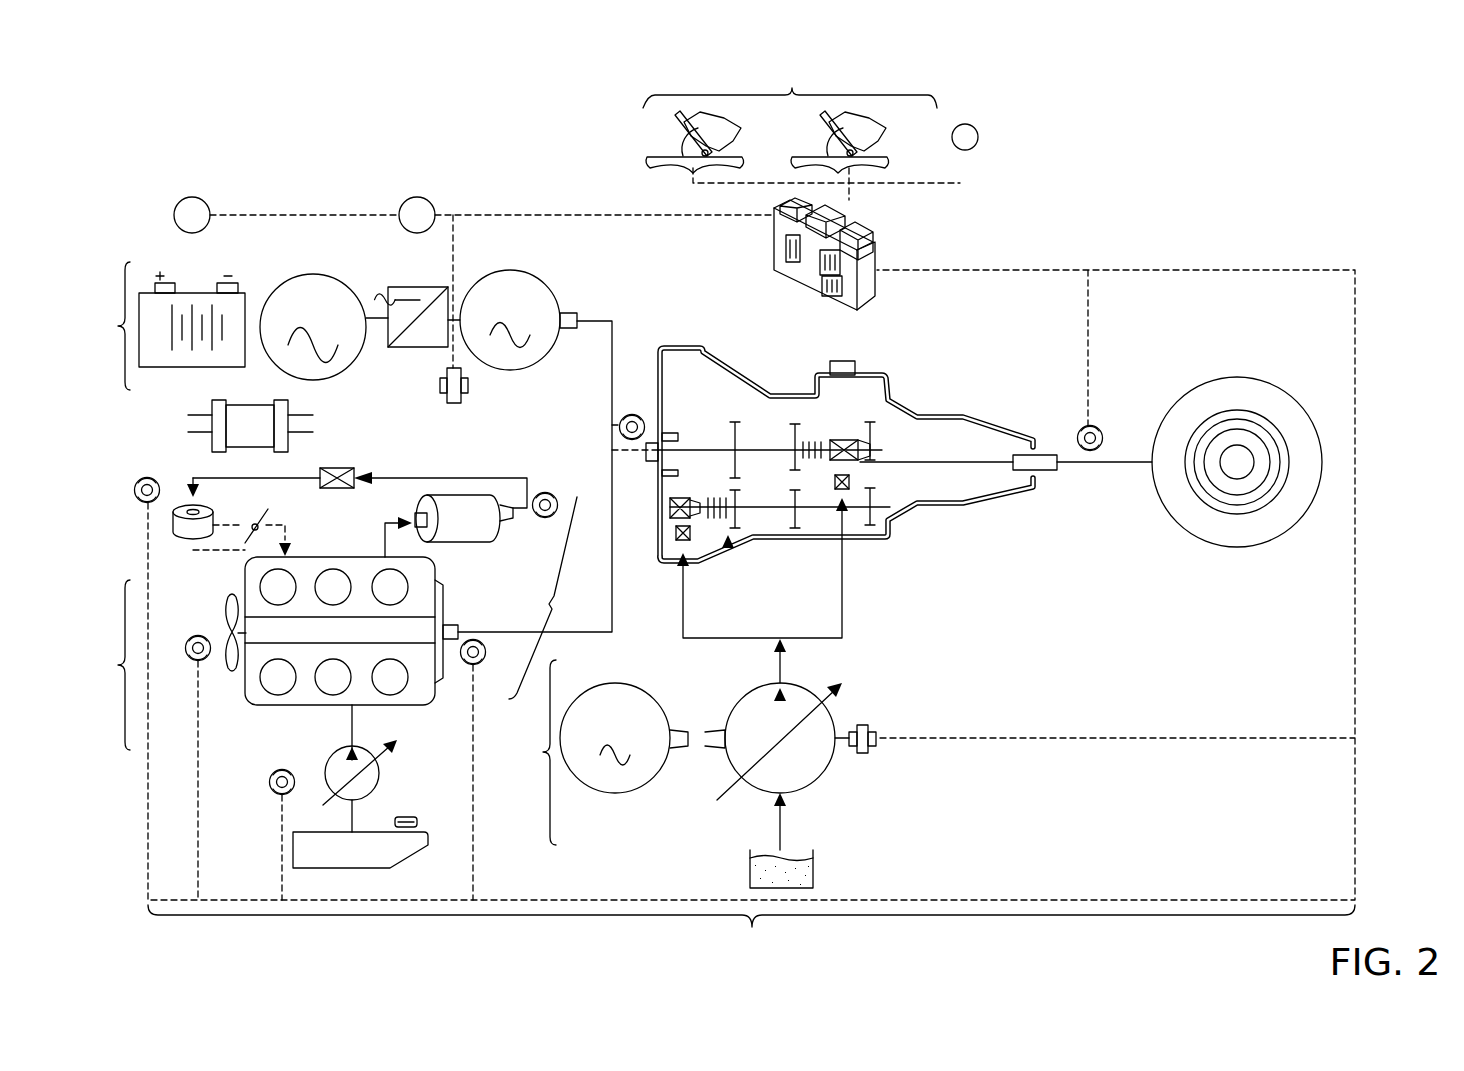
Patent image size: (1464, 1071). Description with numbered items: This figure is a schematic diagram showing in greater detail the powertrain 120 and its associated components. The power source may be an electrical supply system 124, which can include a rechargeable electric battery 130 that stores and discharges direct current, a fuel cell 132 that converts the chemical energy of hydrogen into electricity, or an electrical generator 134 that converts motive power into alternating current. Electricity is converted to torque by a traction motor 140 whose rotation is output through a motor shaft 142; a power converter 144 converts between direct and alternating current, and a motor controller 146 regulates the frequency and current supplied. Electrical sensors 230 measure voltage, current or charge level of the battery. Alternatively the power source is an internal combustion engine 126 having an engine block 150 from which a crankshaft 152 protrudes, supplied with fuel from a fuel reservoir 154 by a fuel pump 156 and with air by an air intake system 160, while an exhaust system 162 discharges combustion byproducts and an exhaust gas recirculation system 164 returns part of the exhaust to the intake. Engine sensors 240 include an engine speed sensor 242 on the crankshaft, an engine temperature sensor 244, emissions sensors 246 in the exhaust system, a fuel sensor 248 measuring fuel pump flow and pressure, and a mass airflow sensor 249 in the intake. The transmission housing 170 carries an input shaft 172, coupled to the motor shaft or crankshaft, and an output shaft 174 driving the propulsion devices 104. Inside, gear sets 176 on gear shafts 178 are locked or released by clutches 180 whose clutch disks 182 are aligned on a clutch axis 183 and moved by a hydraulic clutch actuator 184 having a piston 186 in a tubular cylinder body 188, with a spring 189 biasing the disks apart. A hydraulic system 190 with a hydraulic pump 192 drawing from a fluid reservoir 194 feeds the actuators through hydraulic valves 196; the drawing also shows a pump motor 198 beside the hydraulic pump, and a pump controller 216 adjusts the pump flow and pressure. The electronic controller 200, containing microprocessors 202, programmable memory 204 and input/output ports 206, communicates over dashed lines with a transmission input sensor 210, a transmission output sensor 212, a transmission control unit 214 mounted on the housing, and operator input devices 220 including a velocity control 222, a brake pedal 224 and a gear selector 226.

The propulsion devices 104 is at (1280, 393).
The powertrain 120 is at (751, 623).
The electrical supply system 124 is at (105, 326).
The internal combustion engine 126 is at (106, 665).
The rechargeable electric battery 130 is at (203, 300).
The fuel cell 132 is at (236, 439).
The electrical generator 134 is at (310, 272).
The traction motor 140 is at (512, 272).
The motor shaft 142 is at (568, 310).
The power converter 144 is at (419, 350).
The motor controller 146 is at (468, 395).
The engine block 150 is at (250, 683).
The crankshaft 152 is at (460, 628).
The fuel reservoir 154 is at (395, 867).
The fuel pump 156 is at (382, 777).
The air intake system 160 is at (220, 550).
The exhaust system 162 is at (454, 532).
The exhaust gas recirculation (EGR) system 164 is at (342, 467).
The structural transmission housing 170 is at (797, 385).
The input shaft 172 is at (652, 437).
The output shaft 174 is at (1042, 457).
The gear sets 176 is at (715, 382).
The gear shafts 178 is at (763, 447).
The clutches 180 is at (792, 430).
The clutch disks 182 is at (727, 487).
The clutch axis 183 is at (972, 412).
The hydraulic clutch actuator 184 is at (877, 470).
The piston 186 is at (843, 440).
The tubular cylinder body 188 is at (870, 443).
The spring 189 is at (665, 475).
The hydraulic system 190 is at (531, 752).
The hydraulic pump 192 is at (833, 758).
The fluid reservoir 194 is at (813, 875).
The hydraulic valves 196 is at (843, 503).
The pump motor 198 is at (615, 795).
The electronic controller 200 is at (860, 232).
The microprocessors 202 is at (790, 262).
The programmable memory 204 is at (840, 263).
The input/output ports 206 is at (848, 287).
The transmission input sensor 210 is at (607, 420).
The transmission output sensor 212 is at (1097, 428).
The transmission control unit 214 is at (860, 365).
The pump controller 216 is at (866, 723).
The operator input devices 220 is at (790, 82).
The velocity control 222 is at (677, 138).
The brake pedal 224 is at (822, 140).
The gear selector 226 is at (978, 133).
The electrical sensors 230 is at (192, 197).
The engine sensors 240 is at (552, 598).
The engine speed sensor 242 is at (478, 666).
The engine temperature sensor 244 is at (195, 661).
The emissions sensors 246 is at (558, 508).
The fuel sensor 248 is at (268, 794).
The mass airflow sensor 249 is at (158, 480).